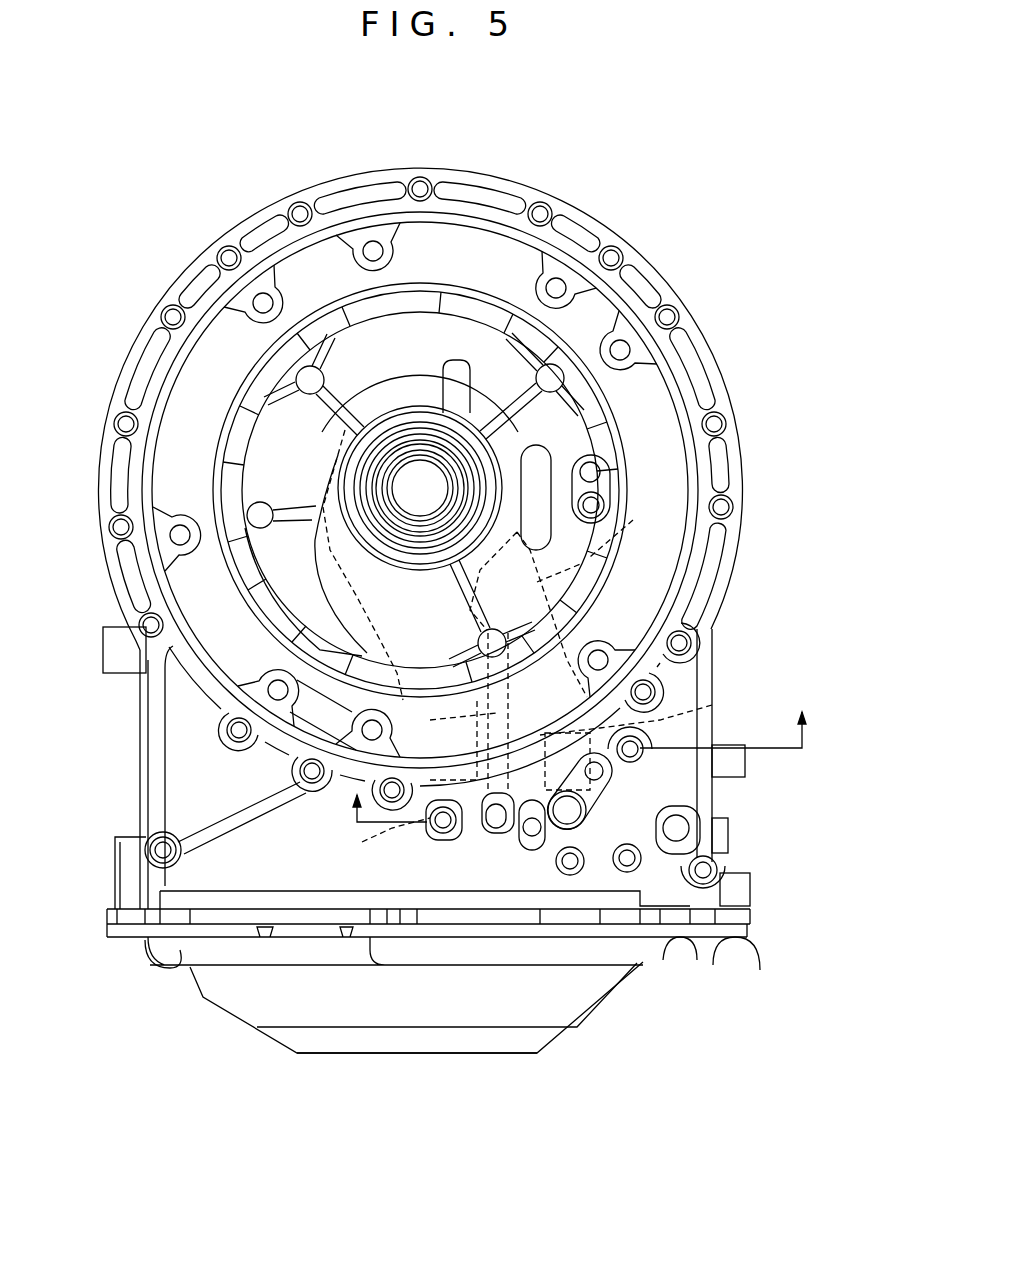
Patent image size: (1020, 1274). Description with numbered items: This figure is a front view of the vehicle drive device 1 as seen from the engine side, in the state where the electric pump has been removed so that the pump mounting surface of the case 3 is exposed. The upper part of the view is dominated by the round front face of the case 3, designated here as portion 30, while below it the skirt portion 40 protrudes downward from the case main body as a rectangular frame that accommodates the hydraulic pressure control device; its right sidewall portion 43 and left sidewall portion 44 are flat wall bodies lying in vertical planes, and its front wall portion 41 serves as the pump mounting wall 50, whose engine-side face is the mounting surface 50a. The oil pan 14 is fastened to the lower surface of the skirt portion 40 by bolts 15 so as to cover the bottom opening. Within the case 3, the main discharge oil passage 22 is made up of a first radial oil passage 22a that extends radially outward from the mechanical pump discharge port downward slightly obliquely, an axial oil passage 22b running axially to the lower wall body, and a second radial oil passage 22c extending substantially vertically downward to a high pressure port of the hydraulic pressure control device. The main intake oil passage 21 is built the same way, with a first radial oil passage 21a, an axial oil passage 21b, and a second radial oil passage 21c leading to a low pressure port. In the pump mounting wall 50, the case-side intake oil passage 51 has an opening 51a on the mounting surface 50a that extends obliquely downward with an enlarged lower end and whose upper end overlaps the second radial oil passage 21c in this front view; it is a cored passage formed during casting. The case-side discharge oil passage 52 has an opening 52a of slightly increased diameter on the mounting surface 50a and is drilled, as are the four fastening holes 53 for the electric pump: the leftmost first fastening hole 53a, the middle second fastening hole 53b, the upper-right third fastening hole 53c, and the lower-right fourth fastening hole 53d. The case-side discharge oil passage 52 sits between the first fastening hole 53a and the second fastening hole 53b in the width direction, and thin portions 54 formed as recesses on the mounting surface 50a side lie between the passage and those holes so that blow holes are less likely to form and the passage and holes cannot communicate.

The vehicle drive device 1 is at (175, 178).
The case 3 is at (436, 653).
The first case portion 30 is at (627, 242).
The skirt portion 40 is at (125, 762).
The right sidewall portion 43 is at (148, 805).
The left sidewall portion 44 is at (715, 656).
The main intake oil passage 21 is at (605, 593).
The first radial oil passage 21a is at (600, 535).
The axial oil passage 21b is at (580, 697).
The second radial oil passage 21c is at (712, 705).
The main discharge oil passage 22 is at (420, 589).
The first radial oil passage 22a is at (340, 607).
The axial oil passage 22b is at (319, 713).
The second radial oil passage 22c is at (432, 812).
The case-side discharge oil passage 52 is at (510, 780).
The opening 52a is at (495, 828).
The fastening holes 53 is at (604, 884).
The first fastening hole 53a is at (443, 833).
The second fastening hole 53b is at (570, 875).
The third fastening hole 53c is at (588, 815).
The fourth fastening hole 53d is at (627, 872).
The case-side intake oil passage 51 is at (707, 829).
The opening 51a is at (600, 774).
The thin portions 54 is at (577, 838).
The bolts 15 is at (160, 960).
The front wall portion 41 is at (402, 980).
The pump mounting wall 50 is at (245, 878).
The mounting surface 50a is at (600, 870).
The oil pan 14 is at (425, 1045).